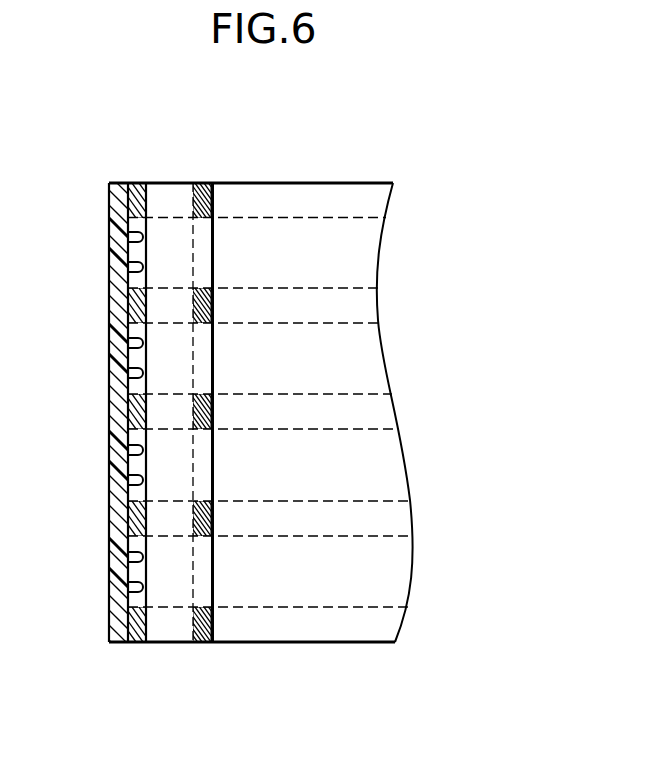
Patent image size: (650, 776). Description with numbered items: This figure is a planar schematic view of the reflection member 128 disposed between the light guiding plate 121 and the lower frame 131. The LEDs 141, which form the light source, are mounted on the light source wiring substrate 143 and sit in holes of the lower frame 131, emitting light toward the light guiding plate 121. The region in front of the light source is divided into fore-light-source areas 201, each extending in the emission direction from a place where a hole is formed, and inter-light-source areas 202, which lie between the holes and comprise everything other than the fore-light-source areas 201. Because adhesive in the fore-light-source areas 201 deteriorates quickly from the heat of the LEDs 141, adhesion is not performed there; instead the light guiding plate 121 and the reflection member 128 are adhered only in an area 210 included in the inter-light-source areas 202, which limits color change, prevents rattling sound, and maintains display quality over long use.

The light guiding plate 121 is at (332, 193).
The reflection member 128 is at (184, 184).
The lower frame 131 is at (137, 184).
The LED 141 is at (137, 237).
The light source wiring substrate 143 is at (119, 184).
The fore-light-source area 201 is at (357, 252).
The inter-light-source area 202 is at (363, 200).
The area 210 is at (200, 642).